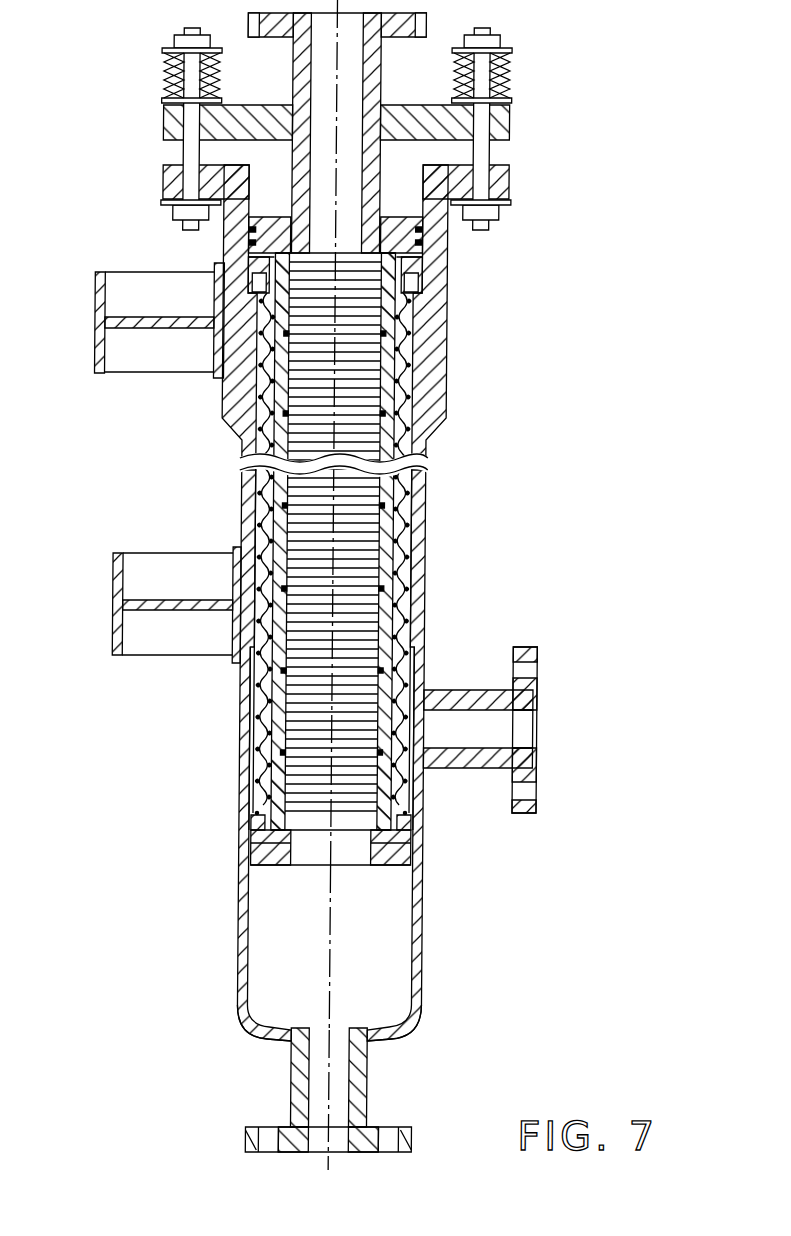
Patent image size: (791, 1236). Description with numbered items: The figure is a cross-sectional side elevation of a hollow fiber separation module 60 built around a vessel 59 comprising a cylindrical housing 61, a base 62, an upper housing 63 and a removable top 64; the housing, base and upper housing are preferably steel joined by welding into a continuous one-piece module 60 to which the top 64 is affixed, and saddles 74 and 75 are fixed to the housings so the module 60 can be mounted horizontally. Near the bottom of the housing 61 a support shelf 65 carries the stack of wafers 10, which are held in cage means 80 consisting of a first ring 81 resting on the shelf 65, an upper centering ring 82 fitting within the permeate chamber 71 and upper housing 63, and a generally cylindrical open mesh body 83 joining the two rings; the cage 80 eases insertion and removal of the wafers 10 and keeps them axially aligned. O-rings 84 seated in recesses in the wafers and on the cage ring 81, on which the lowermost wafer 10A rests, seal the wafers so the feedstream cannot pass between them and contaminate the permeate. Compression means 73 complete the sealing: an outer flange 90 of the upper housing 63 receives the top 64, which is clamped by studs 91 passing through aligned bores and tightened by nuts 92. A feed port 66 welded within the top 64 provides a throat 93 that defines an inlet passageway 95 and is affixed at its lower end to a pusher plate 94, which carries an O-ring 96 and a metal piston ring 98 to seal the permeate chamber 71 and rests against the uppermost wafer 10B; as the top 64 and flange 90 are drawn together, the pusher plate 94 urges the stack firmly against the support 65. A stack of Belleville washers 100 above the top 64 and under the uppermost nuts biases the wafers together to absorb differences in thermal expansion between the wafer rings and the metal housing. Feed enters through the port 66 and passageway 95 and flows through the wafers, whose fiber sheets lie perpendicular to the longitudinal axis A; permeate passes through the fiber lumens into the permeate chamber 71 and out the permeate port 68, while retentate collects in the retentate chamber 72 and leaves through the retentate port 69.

The wafers 10 is at (283, 541).
The lowermost wafer 10A is at (267, 795).
The uppermost wafer 10B is at (420, 290).
The vessel 59 is at (267, 738).
The module 60 is at (251, 737).
The cylindrical housing 61 is at (370, 749).
The base 62 is at (362, 1025).
The upper housing 63 is at (373, 317).
The removable top 64 is at (163, 125).
The support shelf 65 is at (375, 859).
The feed port 66 is at (393, 18).
The permeate port 68 is at (515, 730).
The retentate port 69 is at (344, 1090).
The permeate chamber 71 is at (263, 267).
The retentate chamber 72 is at (407, 947).
The compression means 73 is at (532, 126).
The saddle 74 is at (135, 605).
The saddle 75 is at (122, 320).
The cage means 80 is at (390, 641).
The first ring 81 is at (375, 827).
The upper centering ring 82 is at (386, 279).
The open mesh body 83 is at (289, 553).
The O-rings 84 is at (327, 602).
The outer flange 90 is at (166, 182).
The studs 91 is at (379, 129).
The nuts 92 is at (165, 38).
The throat 93 is at (364, 133).
The pusher plate 94 is at (398, 257).
The inlet passageway 95 is at (285, 126).
The O-ring 96 is at (275, 235).
The metal piston ring 98 is at (271, 220).
The Belleville washers 100 is at (153, 126).
The longitudinal axis A is at (413, 1053).